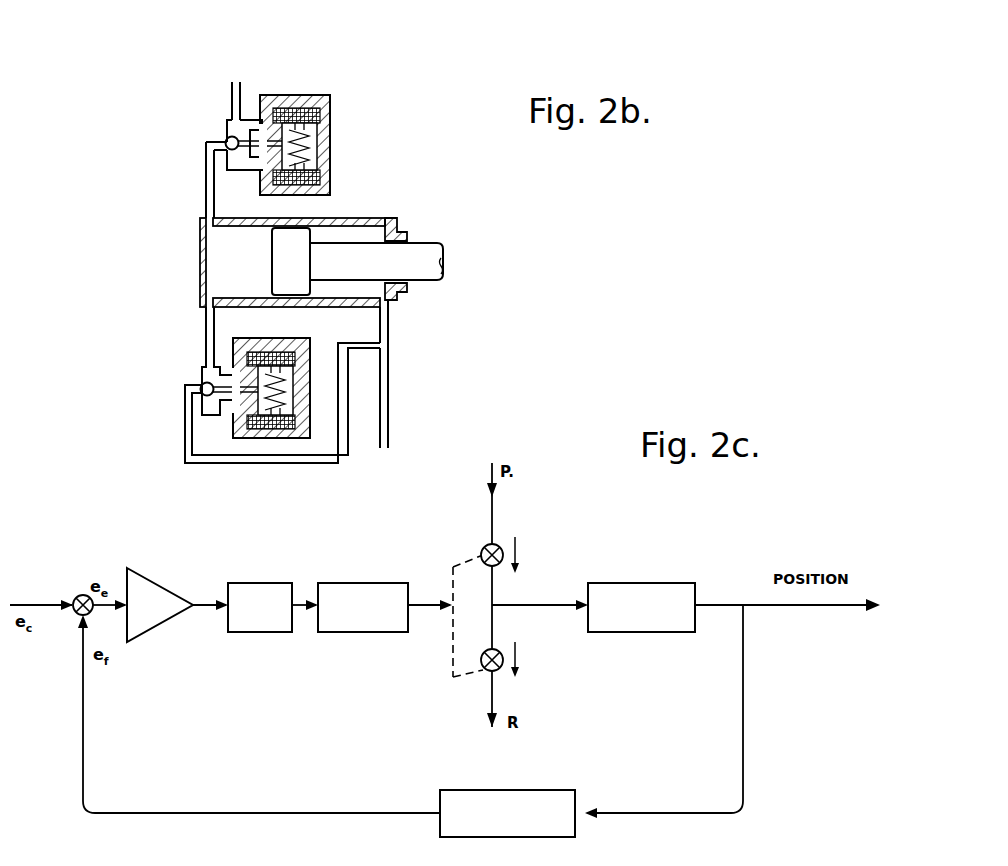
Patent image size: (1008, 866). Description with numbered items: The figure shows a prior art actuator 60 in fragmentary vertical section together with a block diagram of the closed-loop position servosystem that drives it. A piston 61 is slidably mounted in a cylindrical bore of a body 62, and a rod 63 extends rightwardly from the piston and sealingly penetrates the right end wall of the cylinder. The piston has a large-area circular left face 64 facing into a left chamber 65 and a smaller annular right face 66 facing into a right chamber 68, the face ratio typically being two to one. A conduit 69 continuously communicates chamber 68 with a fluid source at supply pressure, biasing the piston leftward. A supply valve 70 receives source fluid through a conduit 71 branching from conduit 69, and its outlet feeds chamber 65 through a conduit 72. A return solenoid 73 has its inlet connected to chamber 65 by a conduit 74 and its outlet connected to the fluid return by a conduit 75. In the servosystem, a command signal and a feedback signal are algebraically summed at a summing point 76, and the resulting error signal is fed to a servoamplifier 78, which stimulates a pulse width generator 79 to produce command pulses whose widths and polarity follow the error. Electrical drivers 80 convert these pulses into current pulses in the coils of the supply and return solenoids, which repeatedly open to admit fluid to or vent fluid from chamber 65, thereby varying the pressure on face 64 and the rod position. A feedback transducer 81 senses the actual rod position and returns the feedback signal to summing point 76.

In FIG. 2B, the actuator 60 is at (392, 178).
In FIG. 2C, the actuator 60 is at (650, 583).
In FIG. 2B, the piston 61 is at (299, 266).
In FIG. 2B, the body 62 is at (312, 217).
In FIG. 2B, the rod 63 is at (438, 241).
In FIG. 2B, the left face 64 is at (271, 279).
In FIG. 2B, the left chamber 65 is at (249, 253).
In FIG. 2B, the right face 66 is at (312, 291).
In FIG. 2B, the right chamber 68 is at (411, 215).
In FIG. 2B, the conduit 69 is at (389, 376).
In FIG. 2B, the supply valve 70 is at (283, 334).
In FIG. 2C, the supply valve 70 is at (500, 546).
In FIG. 2B, the conduit 71 is at (248, 465).
In FIG. 2B, the conduit 72 is at (206, 337).
In FIG. 2B, the return solenoid 73 is at (336, 107).
In FIG. 2C, the return solenoid 73 is at (500, 651).
In FIG. 2B, the conduit 74 is at (206, 185).
In FIG. 2B, the conduit 75 is at (232, 96).
In FIG. 2C, the summing point 76 is at (80, 594).
In FIG. 2C, the servoamplifier 78 is at (159, 582).
In FIG. 2C, the pulse width generator 79 is at (261, 583).
In FIG. 2C, the electrical drivers 80 is at (365, 583).
In FIG. 2C, the feedback transducer 81 is at (475, 790).